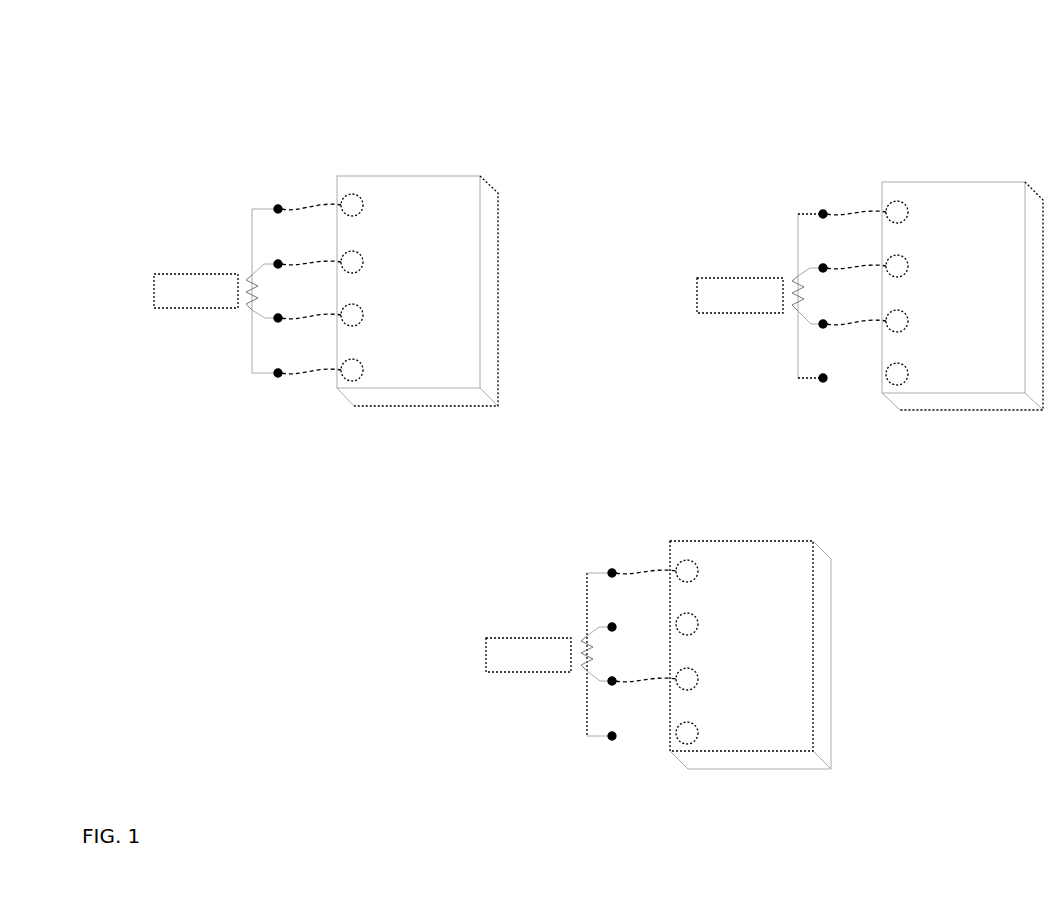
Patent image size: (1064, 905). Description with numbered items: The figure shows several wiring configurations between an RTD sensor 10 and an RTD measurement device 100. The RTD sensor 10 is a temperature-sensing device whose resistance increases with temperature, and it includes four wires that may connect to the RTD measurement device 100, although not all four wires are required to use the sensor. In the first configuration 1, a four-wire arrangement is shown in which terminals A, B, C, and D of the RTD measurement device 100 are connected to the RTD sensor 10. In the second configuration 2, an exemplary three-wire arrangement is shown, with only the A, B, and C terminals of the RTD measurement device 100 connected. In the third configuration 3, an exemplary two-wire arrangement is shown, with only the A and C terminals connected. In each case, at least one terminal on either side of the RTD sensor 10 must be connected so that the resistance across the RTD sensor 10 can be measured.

The first configuration 1 is at (300, 137).
The second configuration 2 is at (886, 153).
The third configuration 3 is at (658, 520).
The RTD sensor 10 is at (468, 473).
The RTD measurement device 100 is at (690, 472).